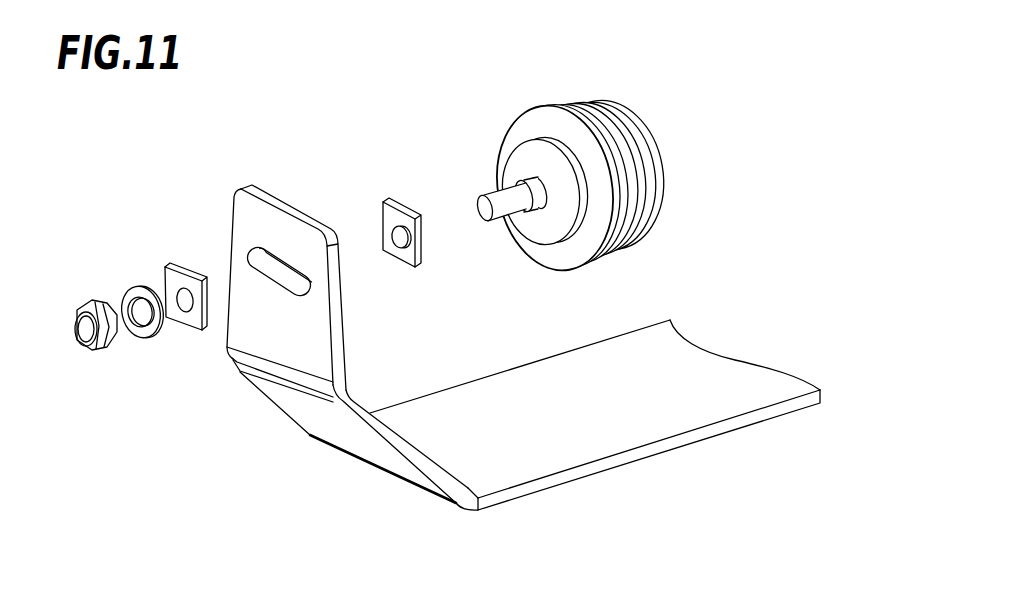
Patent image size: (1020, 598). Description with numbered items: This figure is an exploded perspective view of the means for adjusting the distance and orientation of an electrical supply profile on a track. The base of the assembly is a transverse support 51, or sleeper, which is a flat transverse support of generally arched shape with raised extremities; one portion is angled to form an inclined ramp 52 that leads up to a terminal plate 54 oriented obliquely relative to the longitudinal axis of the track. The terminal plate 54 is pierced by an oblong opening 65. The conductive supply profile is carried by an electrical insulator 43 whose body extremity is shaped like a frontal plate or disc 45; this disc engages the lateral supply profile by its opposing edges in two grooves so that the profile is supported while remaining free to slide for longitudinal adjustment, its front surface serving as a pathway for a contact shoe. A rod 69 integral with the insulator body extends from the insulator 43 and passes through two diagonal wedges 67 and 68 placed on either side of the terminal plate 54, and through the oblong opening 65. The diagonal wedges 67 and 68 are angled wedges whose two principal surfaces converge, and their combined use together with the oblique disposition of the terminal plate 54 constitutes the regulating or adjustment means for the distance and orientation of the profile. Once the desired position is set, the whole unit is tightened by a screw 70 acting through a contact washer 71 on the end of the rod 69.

The electrical insulator 43 is at (578, 95).
The frontal plate or disc 45 is at (632, 118).
The transverse support 51 is at (627, 476).
The inclined ramp 52 is at (311, 418).
The terminal plate 54 is at (265, 327).
The oblong opening 65 is at (278, 267).
The diagonal wedge 67 is at (182, 345).
The diagonal wedge 68 is at (403, 186).
The rod 69 is at (497, 188).
The screw 70 is at (92, 372).
The contact washer 71 is at (136, 278).